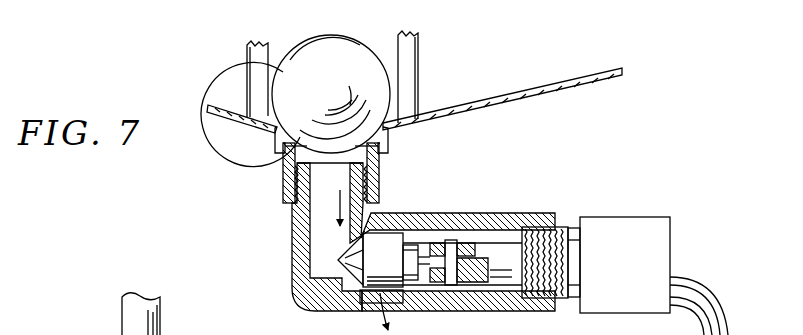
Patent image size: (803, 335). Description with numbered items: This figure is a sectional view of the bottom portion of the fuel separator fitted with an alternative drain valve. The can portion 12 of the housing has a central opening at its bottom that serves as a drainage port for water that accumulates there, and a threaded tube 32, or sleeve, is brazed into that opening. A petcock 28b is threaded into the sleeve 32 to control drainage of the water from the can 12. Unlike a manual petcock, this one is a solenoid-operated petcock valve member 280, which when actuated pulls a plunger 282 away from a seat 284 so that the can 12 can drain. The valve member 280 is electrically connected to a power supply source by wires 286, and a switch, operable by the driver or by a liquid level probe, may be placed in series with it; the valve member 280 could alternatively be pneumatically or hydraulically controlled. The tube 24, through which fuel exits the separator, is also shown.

The can portion 12 is at (540, 92).
The tube 24 is at (157, 333).
The petcock 28b is at (201, 214).
The threaded tube 32 is at (381, 172).
The solenoid-operated petcock valve member 280 is at (627, 233).
The plunger 282 is at (392, 252).
The seat 284 is at (367, 250).
The wires 286 is at (693, 280).